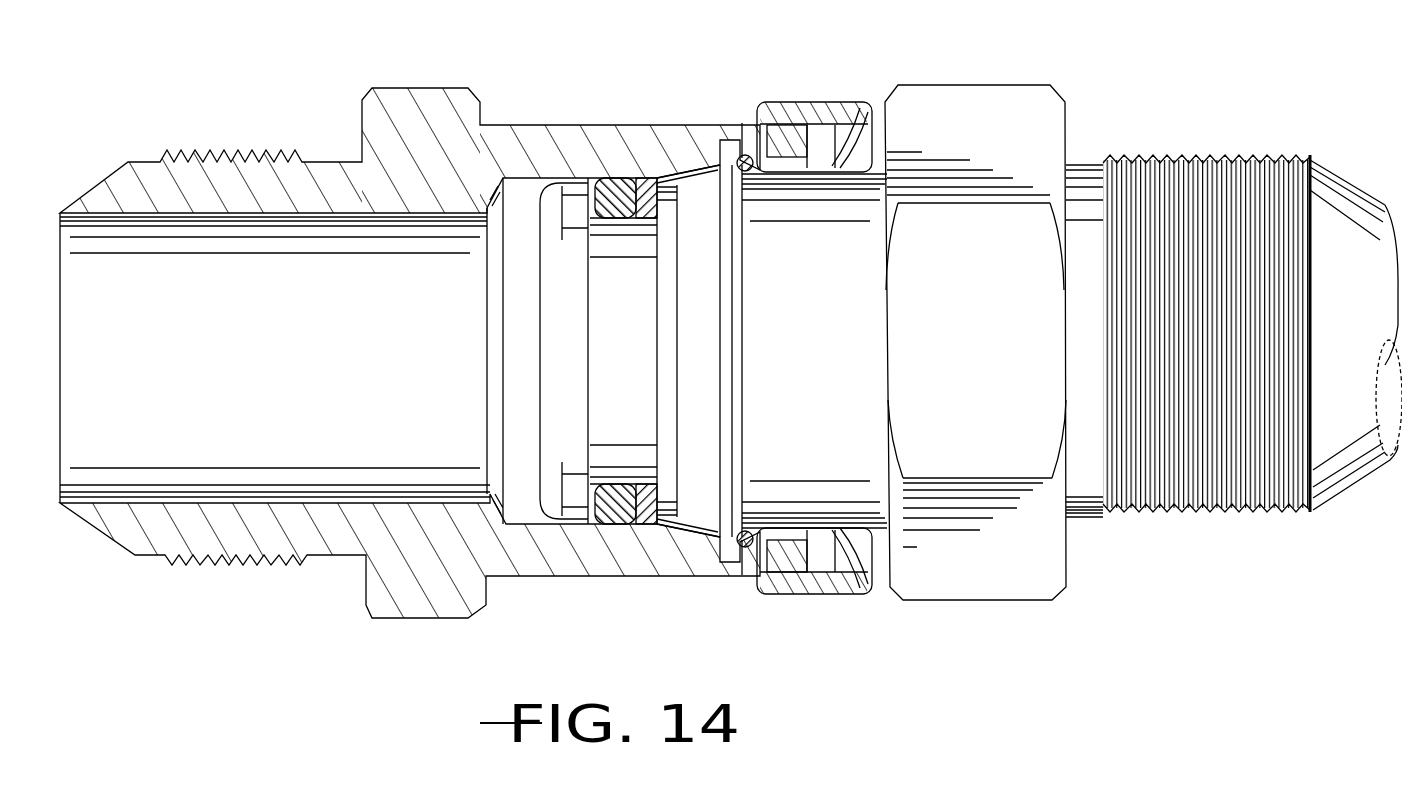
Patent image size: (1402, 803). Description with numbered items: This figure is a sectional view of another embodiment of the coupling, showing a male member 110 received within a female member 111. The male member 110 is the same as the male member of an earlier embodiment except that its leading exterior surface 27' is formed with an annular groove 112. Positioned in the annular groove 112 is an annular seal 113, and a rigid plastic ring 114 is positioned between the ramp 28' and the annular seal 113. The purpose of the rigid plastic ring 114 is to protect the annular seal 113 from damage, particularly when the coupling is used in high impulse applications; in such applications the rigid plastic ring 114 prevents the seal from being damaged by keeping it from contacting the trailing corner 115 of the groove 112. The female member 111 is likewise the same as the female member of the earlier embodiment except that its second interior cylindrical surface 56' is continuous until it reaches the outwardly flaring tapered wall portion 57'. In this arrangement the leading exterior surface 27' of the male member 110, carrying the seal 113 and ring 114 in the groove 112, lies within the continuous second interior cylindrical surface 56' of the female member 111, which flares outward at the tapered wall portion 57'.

The female member 111 is at (335, 128).
The male member 110 is at (1146, 138).
The annular seal 113 is at (612, 177).
The rigid plastic ring 114 is at (641, 177).
The trailing corner 115 is at (667, 177).
The ramp 28' is at (789, 316).
The second interior cylindrical surface 56' is at (451, 351).
The leading exterior surface 27' is at (483, 351).
The annular groove 112 is at (615, 405).
The outwardly flaring tapered wall portion 57' is at (766, 405).